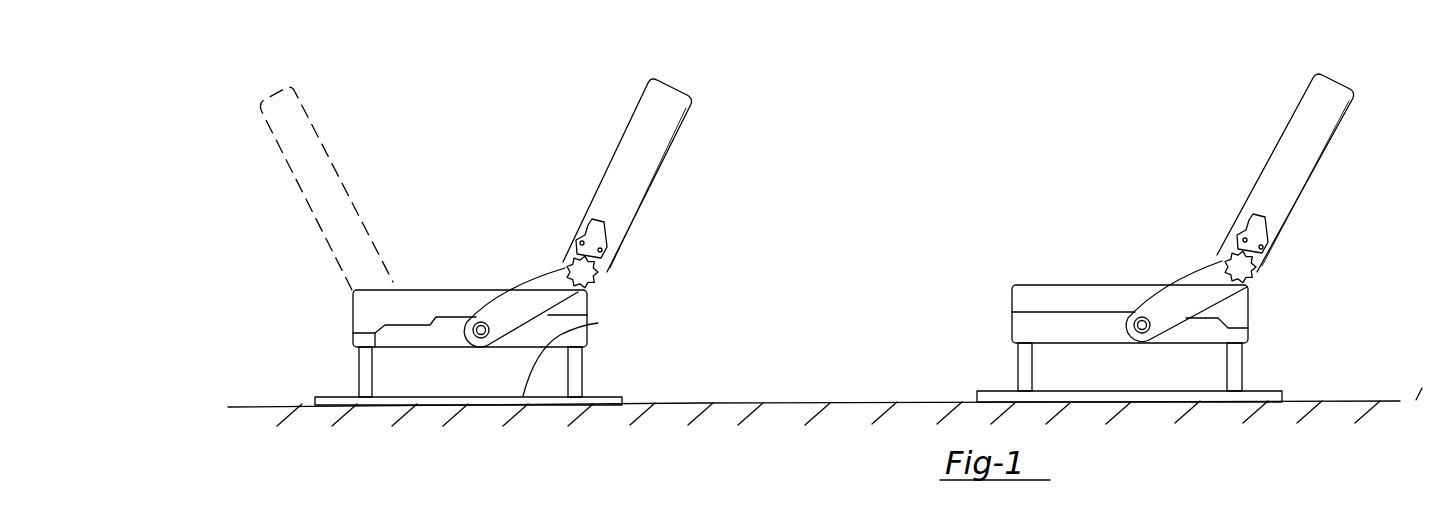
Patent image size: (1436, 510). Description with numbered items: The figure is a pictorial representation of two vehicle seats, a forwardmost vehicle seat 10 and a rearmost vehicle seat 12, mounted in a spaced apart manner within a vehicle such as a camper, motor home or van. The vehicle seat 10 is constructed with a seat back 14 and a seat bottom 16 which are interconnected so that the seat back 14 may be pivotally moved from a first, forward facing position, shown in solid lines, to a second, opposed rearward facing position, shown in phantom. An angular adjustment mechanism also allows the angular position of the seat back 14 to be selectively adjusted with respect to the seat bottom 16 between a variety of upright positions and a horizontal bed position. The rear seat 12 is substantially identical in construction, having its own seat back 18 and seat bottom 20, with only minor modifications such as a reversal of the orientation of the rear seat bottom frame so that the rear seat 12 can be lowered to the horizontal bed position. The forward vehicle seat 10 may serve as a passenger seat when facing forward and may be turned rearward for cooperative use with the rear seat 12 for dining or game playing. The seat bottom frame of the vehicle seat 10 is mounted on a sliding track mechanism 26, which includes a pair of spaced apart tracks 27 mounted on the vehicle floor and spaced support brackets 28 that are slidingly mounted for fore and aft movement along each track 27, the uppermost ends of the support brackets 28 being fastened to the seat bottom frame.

The vehicle seat 10 is at (436, 160).
The rear seat 12 is at (1093, 212).
The seat back 14 is at (313, 216).
The seat bottom 16 is at (445, 250).
The seat back 18 is at (1370, 150).
The seat bottom 20 is at (1020, 272).
The sliding track mechanism 26 is at (348, 360).
The track 27 is at (578, 352).
The support bracket 28 is at (355, 381).